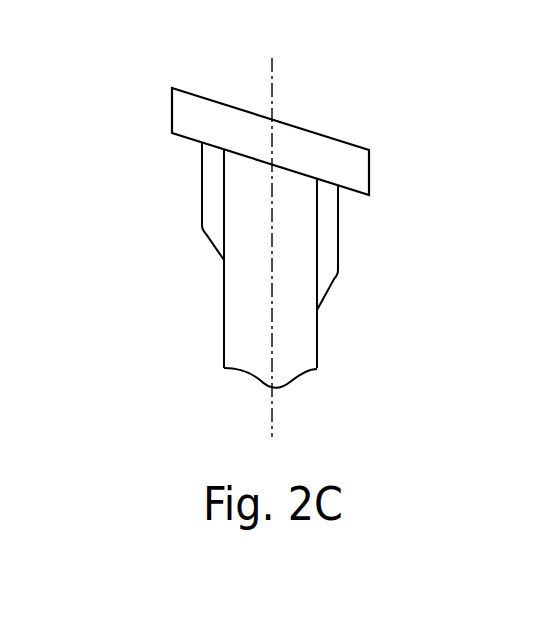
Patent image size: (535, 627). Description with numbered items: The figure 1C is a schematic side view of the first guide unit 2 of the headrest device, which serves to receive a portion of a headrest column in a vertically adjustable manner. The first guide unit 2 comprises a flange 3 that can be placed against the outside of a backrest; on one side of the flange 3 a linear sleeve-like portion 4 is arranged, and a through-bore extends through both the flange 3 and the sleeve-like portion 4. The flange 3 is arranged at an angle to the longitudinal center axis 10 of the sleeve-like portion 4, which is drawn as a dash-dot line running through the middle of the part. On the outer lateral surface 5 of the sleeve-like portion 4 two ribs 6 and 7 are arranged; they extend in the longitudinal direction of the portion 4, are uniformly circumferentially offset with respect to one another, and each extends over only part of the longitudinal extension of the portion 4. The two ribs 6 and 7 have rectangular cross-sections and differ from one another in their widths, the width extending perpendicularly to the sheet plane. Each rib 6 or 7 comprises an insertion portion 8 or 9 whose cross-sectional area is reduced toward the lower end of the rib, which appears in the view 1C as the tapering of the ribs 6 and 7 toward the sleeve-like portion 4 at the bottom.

The tool insert 1C is at (294, 205).
The first guide unit 2 is at (294, 269).
The flange 3 is at (192, 119).
The sleeve-like portion 4 is at (238, 321).
The outer lateral surface 5 is at (223, 310).
The rib 6 is at (200, 195).
The rib 7 is at (338, 228).
The insertion portion 8 is at (222, 240).
The insertion portion 9 is at (325, 280).
The longitudinal center axis 10 is at (272, 297).